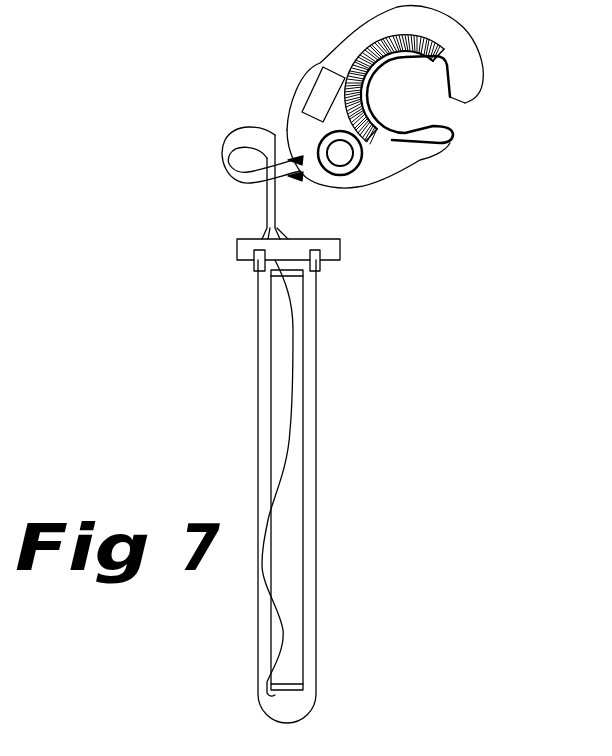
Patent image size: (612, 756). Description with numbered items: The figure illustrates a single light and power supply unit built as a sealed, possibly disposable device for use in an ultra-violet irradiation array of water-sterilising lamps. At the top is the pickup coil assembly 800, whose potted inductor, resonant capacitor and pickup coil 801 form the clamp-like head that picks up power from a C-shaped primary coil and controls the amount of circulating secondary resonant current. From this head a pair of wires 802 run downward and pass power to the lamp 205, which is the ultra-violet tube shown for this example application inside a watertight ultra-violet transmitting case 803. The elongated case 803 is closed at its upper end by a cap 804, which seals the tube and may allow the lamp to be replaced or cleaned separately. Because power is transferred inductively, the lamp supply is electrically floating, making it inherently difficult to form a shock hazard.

The pickup coil assembly 800 is at (337, 0).
The potted inductor/resonant capacitor/pickup coil 801 is at (580, 30).
The pair of wires 802 is at (267, 205).
The watertight ultra-violet transmitting case 803 is at (397, 553).
The cap 804 is at (397, 288).
The lamp 205 is at (390, 473).